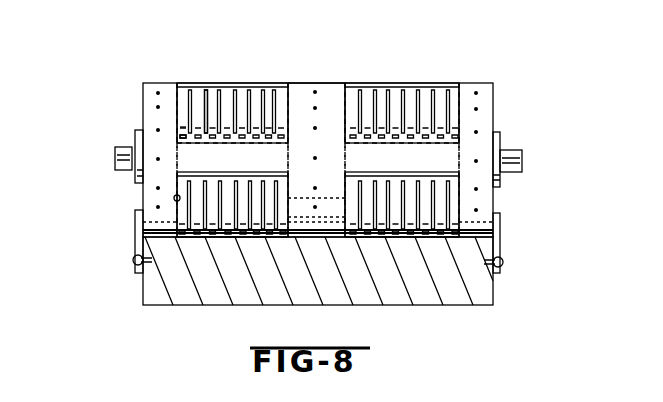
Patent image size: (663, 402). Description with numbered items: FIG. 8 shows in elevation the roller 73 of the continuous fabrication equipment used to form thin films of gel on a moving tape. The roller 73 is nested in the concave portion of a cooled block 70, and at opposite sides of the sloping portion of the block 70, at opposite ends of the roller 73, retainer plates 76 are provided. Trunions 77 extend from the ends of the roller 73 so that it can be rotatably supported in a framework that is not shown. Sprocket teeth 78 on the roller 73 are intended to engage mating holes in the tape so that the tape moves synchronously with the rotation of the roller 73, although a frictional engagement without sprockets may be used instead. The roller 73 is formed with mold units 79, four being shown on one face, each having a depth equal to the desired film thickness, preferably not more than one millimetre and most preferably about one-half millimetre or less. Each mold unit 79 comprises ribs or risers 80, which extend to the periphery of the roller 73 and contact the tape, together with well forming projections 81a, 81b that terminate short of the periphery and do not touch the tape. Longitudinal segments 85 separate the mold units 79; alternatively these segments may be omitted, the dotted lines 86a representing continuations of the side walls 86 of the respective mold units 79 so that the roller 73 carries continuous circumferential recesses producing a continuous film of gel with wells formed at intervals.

The block 70 is at (185, 305).
The roller 73 is at (290, 72).
The retainer plates 76 is at (137, 240).
The trunions 77 is at (115, 158).
The sprocket teeth 78 is at (162, 83).
The mold units 79 is at (194, 70).
The ribs or risers 80 is at (208, 96).
The contact element 81a is at (183, 126).
The contact element 81b is at (183, 136).
The longitudinal segments 85 is at (275, 169).
The side walls 86 is at (174, 198).
The dotted lines 86a is at (178, 162).